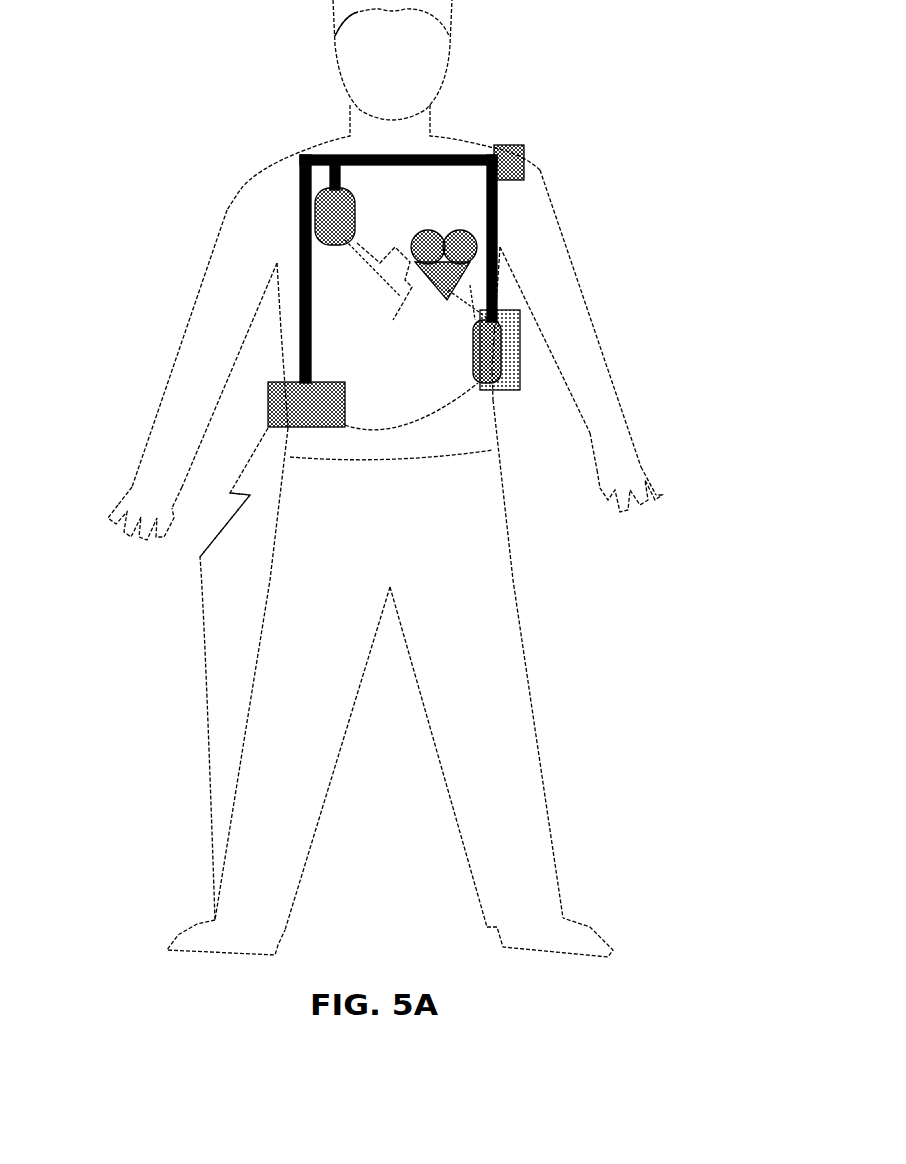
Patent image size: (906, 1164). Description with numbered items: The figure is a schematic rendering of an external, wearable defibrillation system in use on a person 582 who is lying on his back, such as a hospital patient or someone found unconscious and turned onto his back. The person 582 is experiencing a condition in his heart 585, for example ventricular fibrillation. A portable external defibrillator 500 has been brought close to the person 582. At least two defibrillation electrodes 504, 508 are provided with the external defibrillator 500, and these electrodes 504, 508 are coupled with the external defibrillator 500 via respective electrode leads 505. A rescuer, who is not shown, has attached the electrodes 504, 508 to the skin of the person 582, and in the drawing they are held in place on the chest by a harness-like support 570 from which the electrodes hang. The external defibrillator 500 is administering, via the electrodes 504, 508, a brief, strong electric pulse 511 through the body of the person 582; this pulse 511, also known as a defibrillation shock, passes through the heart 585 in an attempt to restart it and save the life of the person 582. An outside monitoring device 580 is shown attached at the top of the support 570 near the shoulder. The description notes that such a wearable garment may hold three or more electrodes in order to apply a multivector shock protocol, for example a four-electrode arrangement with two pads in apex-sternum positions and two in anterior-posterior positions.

The external defibrillator 500 is at (232, 540).
The defibrillation electrode 504 is at (360, 225).
The electrode lead 505 is at (422, 417).
The defibrillation electrode 508 is at (490, 380).
The electric pulse 511 is at (403, 305).
The harness support structure 570 is at (296, 183).
The outside monitoring device 580 is at (525, 150).
The person 582 is at (330, 70).
The heart 585 is at (446, 232).